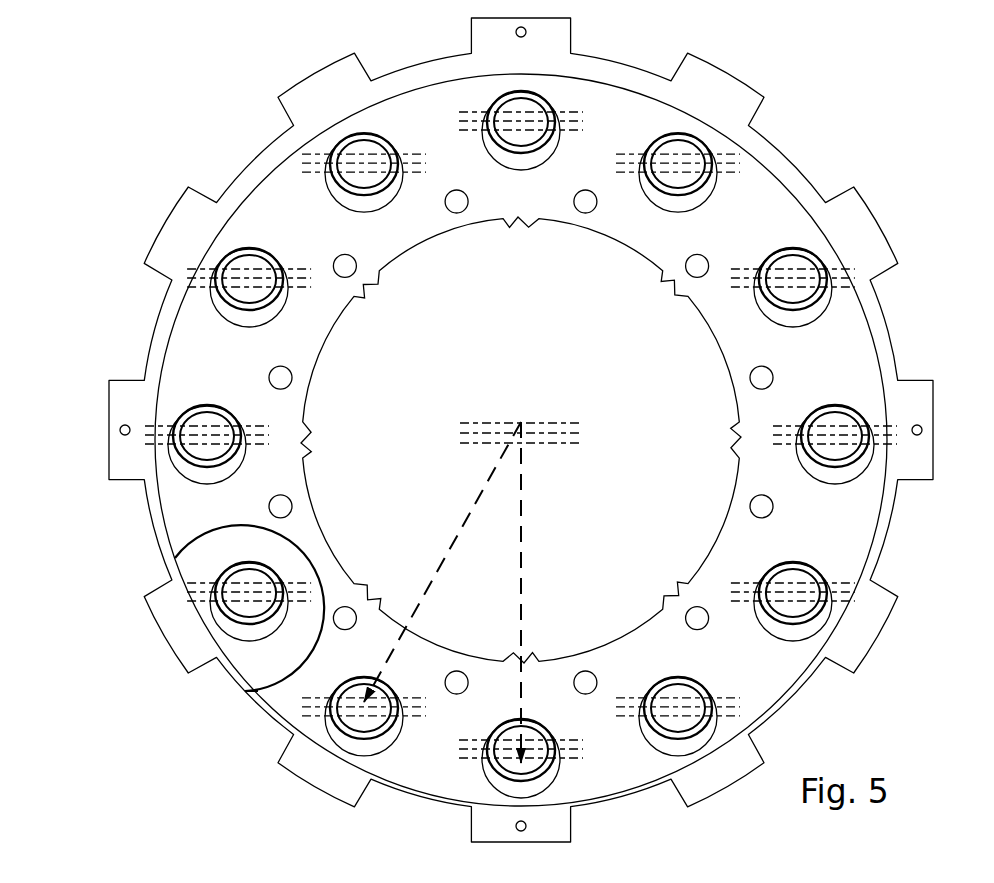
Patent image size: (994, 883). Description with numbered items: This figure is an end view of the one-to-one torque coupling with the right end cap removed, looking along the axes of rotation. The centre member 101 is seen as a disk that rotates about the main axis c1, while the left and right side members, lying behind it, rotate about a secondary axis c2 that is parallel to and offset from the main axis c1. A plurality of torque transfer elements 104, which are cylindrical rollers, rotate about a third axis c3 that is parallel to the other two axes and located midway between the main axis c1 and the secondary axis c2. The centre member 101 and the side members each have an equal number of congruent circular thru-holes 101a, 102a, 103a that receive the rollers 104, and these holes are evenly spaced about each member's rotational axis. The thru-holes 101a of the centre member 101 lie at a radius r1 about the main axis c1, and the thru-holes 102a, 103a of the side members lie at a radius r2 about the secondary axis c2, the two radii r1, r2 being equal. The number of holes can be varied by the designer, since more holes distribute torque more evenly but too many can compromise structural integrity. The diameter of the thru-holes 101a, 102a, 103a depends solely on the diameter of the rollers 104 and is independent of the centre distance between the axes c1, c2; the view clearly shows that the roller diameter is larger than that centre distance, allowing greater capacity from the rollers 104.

The centre member 101 is at (521, 430).
The thru-holes 101a is at (227, 558).
The thru-holes 102a is at (210, 606).
The thru-holes 103a is at (178, 468).
The torque transfer elements 104 is at (323, 137).
The main axis c1 is at (588, 419).
The secondary axis c2 is at (592, 447).
The third axis c3 is at (450, 432).
The radius r1 is at (468, 516).
The radius r2 is at (523, 567).